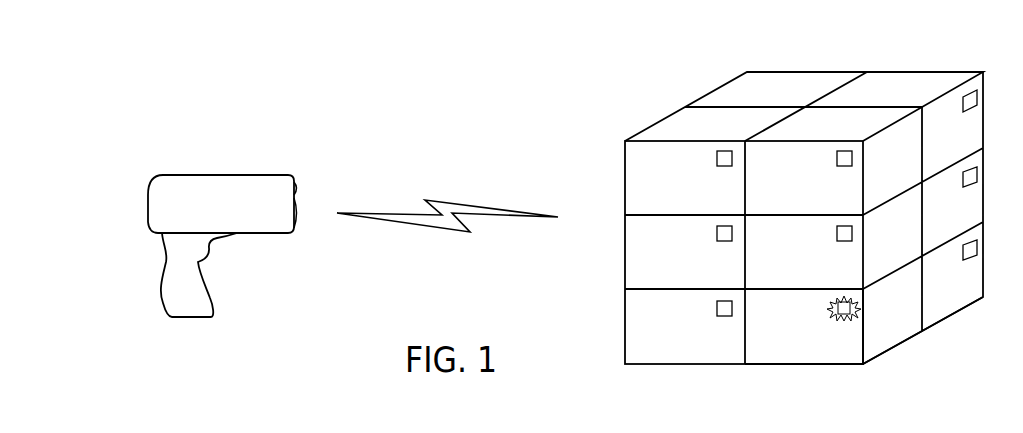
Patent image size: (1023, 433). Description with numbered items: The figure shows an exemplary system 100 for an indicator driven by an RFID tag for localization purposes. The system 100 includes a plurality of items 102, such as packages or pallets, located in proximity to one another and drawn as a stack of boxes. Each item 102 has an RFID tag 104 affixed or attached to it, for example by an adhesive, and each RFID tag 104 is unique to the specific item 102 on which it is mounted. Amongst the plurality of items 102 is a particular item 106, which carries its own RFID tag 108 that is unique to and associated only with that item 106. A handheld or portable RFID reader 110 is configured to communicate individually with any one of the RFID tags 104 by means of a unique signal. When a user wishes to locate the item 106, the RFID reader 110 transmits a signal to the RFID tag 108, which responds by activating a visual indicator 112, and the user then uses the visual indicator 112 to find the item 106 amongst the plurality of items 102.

The system 100 is at (132, 96).
The items 102 is at (645, 77).
The RFID tag 104 is at (716, 159).
The particular item 106 is at (908, 340).
The RFID tag 108 is at (832, 310).
The RFID reader 110 is at (223, 186).
The visual indicator 112 is at (836, 332).